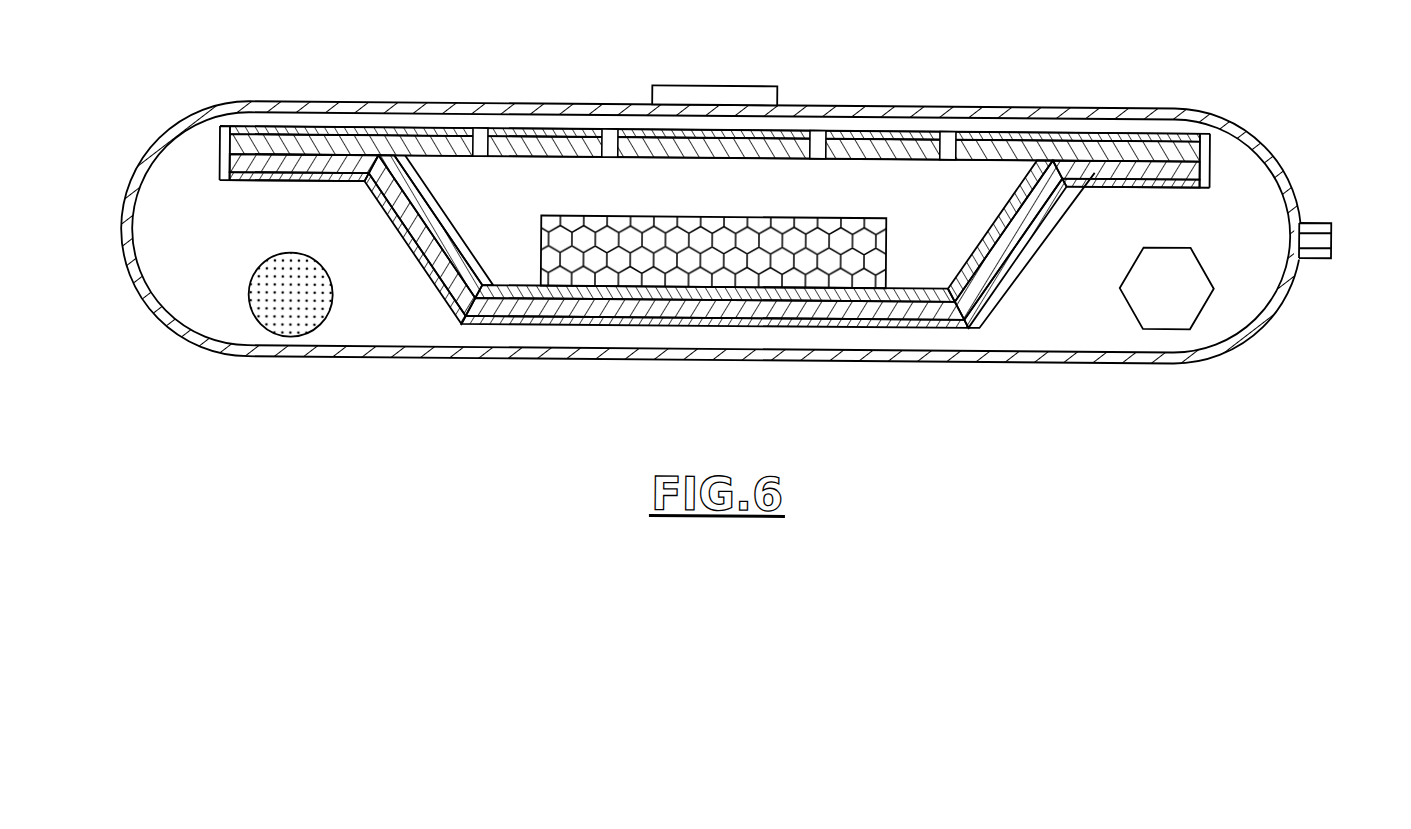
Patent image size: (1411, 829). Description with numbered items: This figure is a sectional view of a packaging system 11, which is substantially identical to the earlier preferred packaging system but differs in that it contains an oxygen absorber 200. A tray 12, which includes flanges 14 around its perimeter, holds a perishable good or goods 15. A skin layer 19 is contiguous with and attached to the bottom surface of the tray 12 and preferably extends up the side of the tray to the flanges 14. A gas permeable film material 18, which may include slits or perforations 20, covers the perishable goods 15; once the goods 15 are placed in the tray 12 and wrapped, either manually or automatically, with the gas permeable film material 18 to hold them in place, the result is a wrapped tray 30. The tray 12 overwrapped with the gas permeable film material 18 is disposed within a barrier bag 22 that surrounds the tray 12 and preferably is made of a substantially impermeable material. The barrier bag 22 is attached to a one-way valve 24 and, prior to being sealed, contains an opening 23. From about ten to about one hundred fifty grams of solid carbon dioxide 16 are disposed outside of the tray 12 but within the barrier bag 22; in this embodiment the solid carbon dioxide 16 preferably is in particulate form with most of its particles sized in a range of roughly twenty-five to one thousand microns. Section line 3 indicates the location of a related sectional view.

The section line 3 is at (497, 320).
The packaging system 11 is at (170, 98).
The tray 12 is at (732, 322).
The flanges 14 is at (327, 185).
The perishable goods 15 is at (770, 231).
The solid carbon dioxide 16 is at (320, 297).
The gas permeable film material 18 is at (1002, 252).
The skin layer 19 is at (432, 218).
The slits or perforations 20 is at (1035, 220).
The barrier bag 22 is at (362, 118).
The opening 23 is at (1320, 233).
The one-way valve 24 is at (678, 95).
The wrapped tray 30 is at (863, 118).
The oxygen absorber 200 is at (1178, 309).